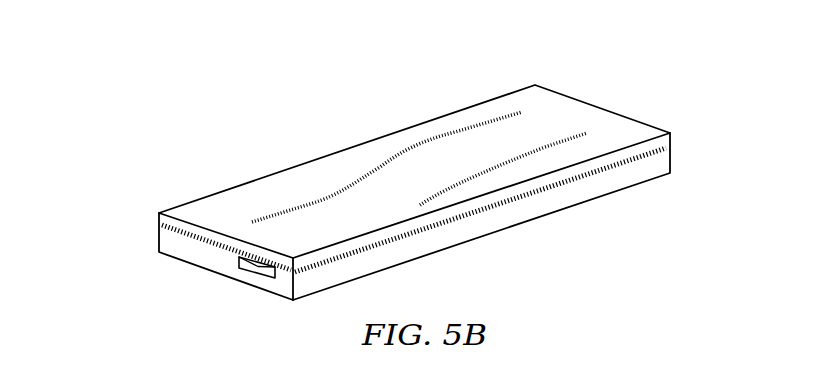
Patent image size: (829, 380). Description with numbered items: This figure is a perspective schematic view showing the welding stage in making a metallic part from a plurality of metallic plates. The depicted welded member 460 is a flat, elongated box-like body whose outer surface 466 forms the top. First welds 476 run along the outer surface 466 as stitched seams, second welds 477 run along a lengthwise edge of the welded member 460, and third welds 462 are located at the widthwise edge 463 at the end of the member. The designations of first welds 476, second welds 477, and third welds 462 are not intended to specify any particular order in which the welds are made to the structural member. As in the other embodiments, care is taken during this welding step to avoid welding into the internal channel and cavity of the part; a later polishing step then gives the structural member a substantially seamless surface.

The welded member 460 is at (379, 189).
The third welds 462 is at (148, 227).
The widthwise edge 463 is at (202, 255).
The outer surface 466 is at (618, 132).
The first welds 476 is at (428, 173).
The second welds 477 is at (467, 130).